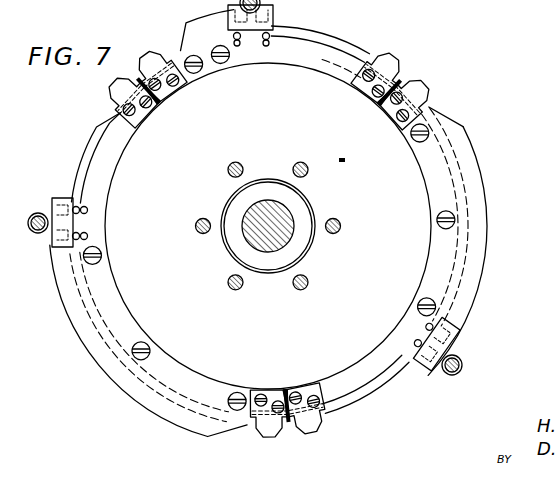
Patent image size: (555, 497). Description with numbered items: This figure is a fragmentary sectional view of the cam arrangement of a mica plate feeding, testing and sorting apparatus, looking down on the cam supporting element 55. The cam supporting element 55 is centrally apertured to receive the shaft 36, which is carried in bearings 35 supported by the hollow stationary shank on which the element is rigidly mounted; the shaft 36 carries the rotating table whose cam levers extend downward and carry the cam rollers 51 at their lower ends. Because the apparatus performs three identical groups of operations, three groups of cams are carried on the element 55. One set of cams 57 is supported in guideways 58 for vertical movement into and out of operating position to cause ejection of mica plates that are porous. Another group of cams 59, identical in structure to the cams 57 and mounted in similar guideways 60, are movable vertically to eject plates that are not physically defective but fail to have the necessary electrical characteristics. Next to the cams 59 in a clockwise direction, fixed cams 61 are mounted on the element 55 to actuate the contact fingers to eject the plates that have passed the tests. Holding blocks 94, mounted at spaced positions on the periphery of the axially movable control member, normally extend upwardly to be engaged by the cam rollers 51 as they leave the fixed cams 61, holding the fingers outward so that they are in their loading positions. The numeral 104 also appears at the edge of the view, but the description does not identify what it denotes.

The bearings 35 is at (298, 201).
The shaft 36 is at (280, 237).
The cam rollers 51 is at (36, 232).
The cam supporting element 55 is at (418, 202).
The cams 57 is at (308, 434).
The guideways 58 is at (305, 392).
The cams 59 is at (267, 434).
The guideways 60 is at (270, 400).
The fixed cams 61 is at (185, 33).
The holding blocks 94 is at (55, 207).
The member 104 is at (214, 4).